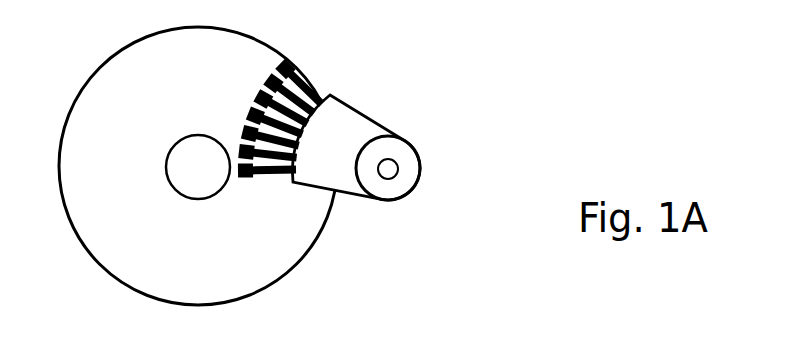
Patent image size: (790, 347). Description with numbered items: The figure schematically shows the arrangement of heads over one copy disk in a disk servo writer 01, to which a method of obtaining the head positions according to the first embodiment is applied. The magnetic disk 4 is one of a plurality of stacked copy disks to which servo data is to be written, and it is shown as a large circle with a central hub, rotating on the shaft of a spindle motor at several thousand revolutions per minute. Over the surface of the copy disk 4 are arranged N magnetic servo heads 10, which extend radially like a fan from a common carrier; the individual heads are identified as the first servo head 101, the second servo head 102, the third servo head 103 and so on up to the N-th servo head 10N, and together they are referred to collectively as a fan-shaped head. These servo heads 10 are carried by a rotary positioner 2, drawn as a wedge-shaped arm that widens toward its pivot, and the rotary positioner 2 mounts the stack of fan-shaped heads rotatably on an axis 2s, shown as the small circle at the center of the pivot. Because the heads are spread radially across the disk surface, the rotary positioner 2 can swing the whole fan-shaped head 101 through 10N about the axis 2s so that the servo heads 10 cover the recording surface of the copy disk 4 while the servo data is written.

The magnetic disk (copy disk) 4 is at (102, 87).
The rotary positioner 2 is at (387, 191).
The axis of the rotary positioner 2s is at (398, 169).
The magnetic servo heads 10 is at (307, 177).
The first servo head 101 is at (240, 179).
The second servo head 102 is at (240, 146).
The third servo head 103 is at (243, 127).
The N-th servo head 10N is at (268, 72).
The disk servo writer 01 is at (556, 73).